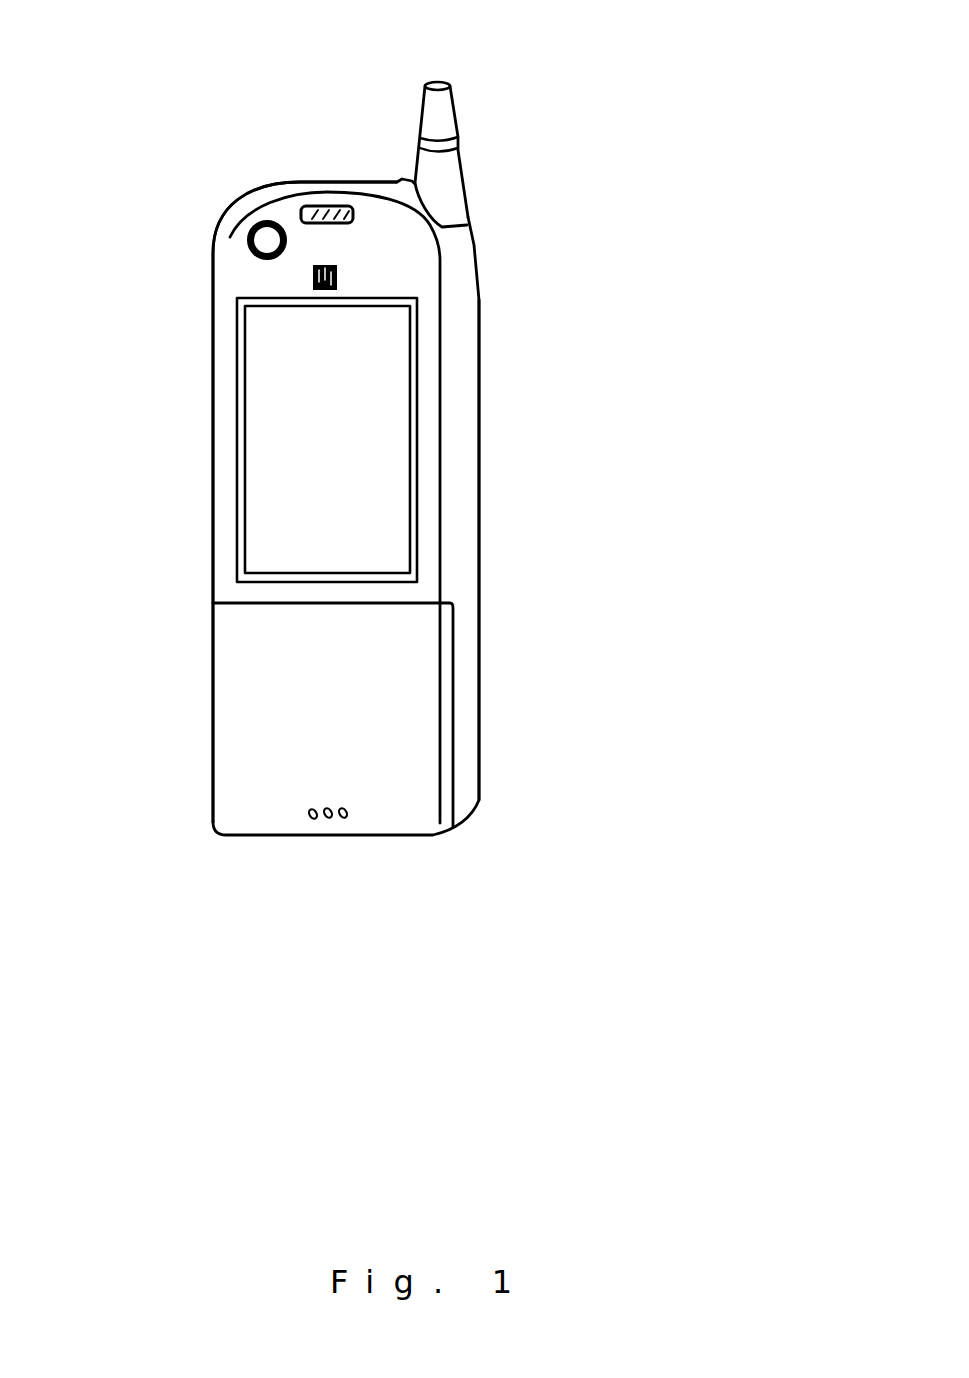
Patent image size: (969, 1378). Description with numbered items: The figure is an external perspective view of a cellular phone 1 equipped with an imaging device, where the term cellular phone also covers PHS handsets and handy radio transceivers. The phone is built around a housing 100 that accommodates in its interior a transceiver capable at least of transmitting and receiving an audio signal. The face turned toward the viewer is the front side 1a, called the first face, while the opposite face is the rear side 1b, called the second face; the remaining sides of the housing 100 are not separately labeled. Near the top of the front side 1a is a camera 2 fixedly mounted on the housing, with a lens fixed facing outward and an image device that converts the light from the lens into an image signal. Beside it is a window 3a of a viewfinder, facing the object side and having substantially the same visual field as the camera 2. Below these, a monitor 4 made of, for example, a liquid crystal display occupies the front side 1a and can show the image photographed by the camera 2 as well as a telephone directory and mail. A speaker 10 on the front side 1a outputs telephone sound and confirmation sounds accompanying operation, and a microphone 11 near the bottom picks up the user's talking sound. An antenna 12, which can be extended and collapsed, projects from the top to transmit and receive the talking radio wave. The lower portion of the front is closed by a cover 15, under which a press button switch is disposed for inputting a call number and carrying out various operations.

The cellular phone 1 is at (96, 155).
The housing 100 is at (220, 328).
The front side 1a is at (227, 397).
The rear side 1b is at (485, 503).
The camera 2 is at (265, 237).
The window 3a is at (327, 205).
The monitor 4 is at (382, 407).
The speaker 10 is at (338, 272).
The microphone 11 is at (345, 814).
The antenna 12 is at (458, 110).
The cover 15 is at (452, 673).